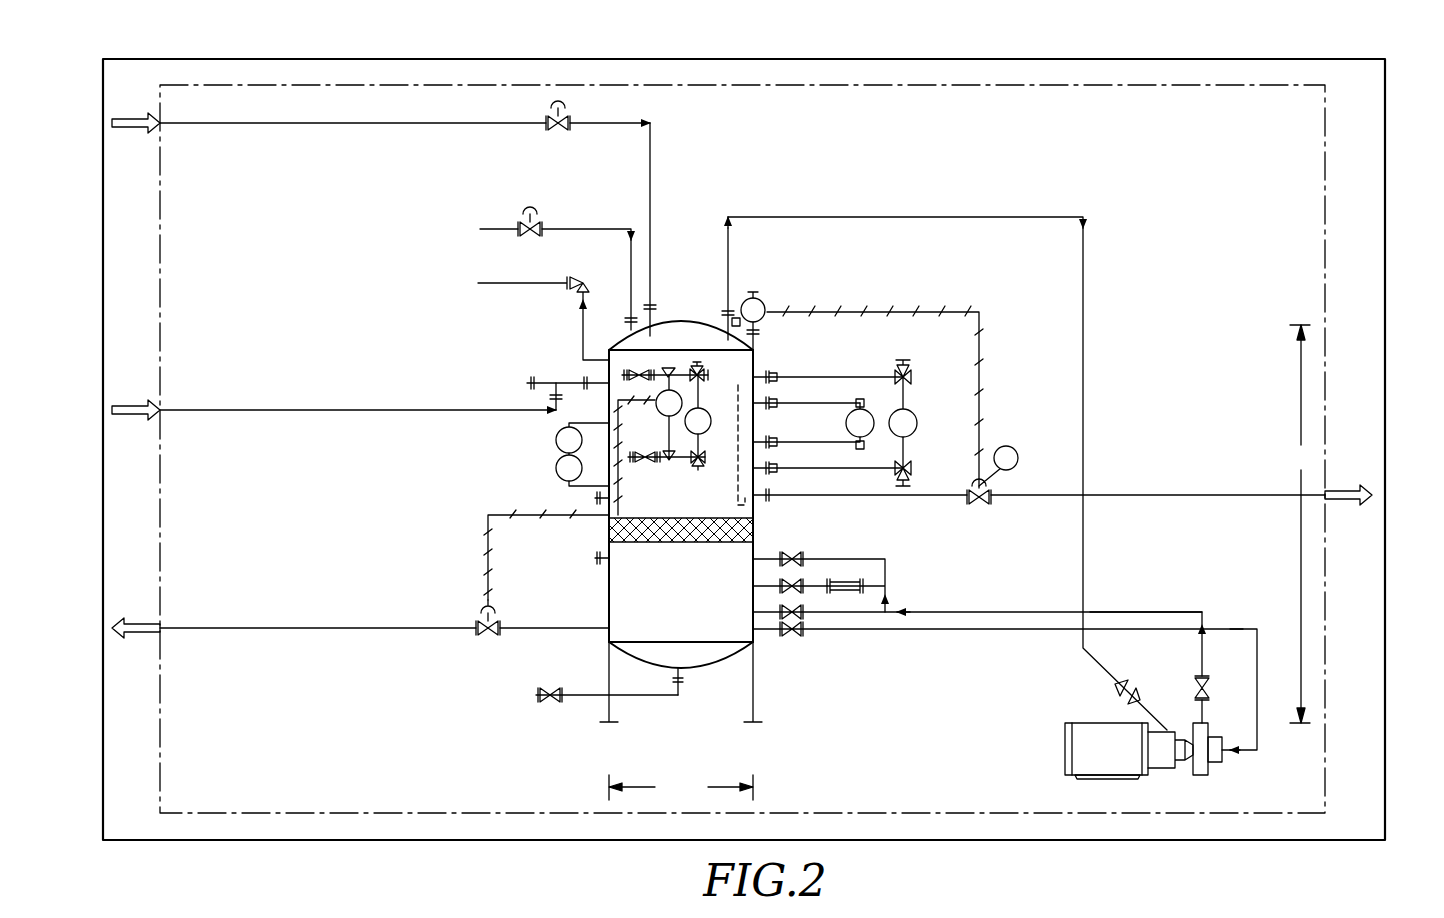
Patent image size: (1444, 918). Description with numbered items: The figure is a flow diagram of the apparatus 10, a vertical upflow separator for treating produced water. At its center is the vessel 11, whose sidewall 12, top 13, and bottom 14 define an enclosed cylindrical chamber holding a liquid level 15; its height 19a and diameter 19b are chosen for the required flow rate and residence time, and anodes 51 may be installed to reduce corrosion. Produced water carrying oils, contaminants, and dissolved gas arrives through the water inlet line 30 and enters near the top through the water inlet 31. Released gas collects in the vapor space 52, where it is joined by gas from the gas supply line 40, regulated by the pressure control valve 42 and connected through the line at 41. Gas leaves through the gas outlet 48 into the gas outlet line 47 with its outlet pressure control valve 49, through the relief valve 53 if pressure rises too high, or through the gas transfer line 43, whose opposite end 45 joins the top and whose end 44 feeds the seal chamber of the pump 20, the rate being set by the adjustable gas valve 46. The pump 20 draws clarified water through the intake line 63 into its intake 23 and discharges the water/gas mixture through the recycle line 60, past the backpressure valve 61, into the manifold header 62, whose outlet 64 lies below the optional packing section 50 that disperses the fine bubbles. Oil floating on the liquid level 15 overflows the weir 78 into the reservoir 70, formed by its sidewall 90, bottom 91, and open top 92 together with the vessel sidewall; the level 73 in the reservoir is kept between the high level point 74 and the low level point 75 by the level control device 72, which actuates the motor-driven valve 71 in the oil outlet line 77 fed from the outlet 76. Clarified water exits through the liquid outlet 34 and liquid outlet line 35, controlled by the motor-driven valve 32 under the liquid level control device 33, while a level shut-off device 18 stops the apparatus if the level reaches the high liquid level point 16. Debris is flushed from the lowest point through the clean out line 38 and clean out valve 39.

The apparatus 10 is at (1345, 147).
The vessel 11 is at (770, 514).
The sidewall 12 is at (760, 518).
The top 13 is at (672, 330).
The bottom 14 is at (690, 670).
The liquid level 15 is at (608, 385).
The high liquid level point 16 is at (660, 372).
The level shut-off device 18 is at (664, 430).
The height 19a is at (1301, 524).
The diameter 19b is at (681, 787).
The pump 20 is at (1062, 768).
The intake 23 is at (1218, 762).
The water inlet line 30 is at (340, 400).
The water inlet 31 is at (590, 378).
The motor-driven valve 32 is at (484, 638).
The liquid level control device 33 is at (565, 445).
The liquid outlet 34 is at (610, 618).
The liquid outlet line 35 is at (260, 630).
The clean out line 38 is at (642, 700).
The clean out valve 39 is at (550, 704).
The gas supply line 40 is at (312, 121).
The supply connection 41 is at (652, 300).
The pressure control valve 42 is at (562, 133).
The gas transfer line 43 is at (1085, 395).
The end of gas transfer line 44 is at (1165, 725).
The opposite end of gas transfer line 45 is at (722, 305).
The adjustable gas valve 46 is at (1118, 690).
The gas outlet line 47 is at (486, 233).
The gas outlet 48 is at (630, 342).
The outlet pressure control valve 49 is at (527, 208).
The packing section 50 is at (665, 526).
The anodes 51 is at (588, 499).
The vapor space 52 is at (700, 382).
The relief valve 53 is at (572, 292).
The recycle line 60 is at (1140, 606).
The backpressure valve 61 is at (1212, 688).
The manifold header 62 is at (890, 580).
The intake line 63 is at (960, 640).
The outlet of manifold header 64 is at (752, 612).
The reservoir 70 is at (684, 532).
The motor-driven valve 71 is at (1010, 446).
The level control device 72 is at (917, 424).
The level 73 is at (758, 422).
The high level point 74 is at (770, 398).
The low level point 75 is at (762, 464).
The outlet 76 is at (762, 490).
The oil outlet line 77 is at (1150, 495).
The weir 78 is at (712, 420).
The sidewall 90 is at (720, 468).
The bottom 91 is at (742, 505).
The open top 92 is at (762, 372).